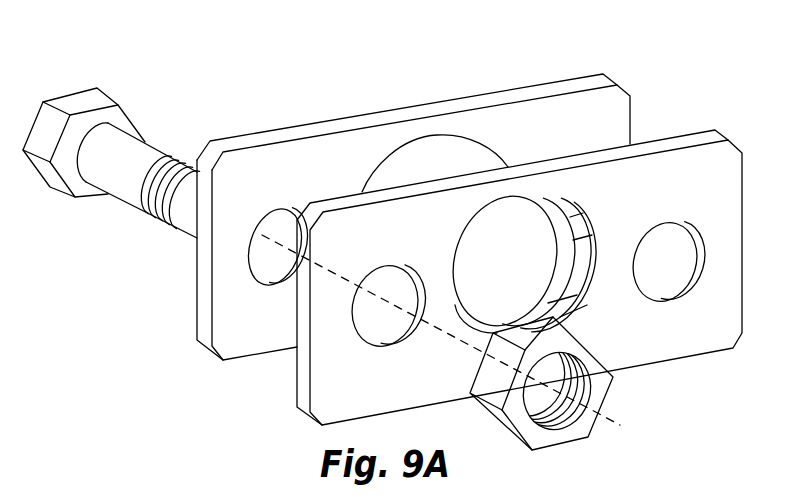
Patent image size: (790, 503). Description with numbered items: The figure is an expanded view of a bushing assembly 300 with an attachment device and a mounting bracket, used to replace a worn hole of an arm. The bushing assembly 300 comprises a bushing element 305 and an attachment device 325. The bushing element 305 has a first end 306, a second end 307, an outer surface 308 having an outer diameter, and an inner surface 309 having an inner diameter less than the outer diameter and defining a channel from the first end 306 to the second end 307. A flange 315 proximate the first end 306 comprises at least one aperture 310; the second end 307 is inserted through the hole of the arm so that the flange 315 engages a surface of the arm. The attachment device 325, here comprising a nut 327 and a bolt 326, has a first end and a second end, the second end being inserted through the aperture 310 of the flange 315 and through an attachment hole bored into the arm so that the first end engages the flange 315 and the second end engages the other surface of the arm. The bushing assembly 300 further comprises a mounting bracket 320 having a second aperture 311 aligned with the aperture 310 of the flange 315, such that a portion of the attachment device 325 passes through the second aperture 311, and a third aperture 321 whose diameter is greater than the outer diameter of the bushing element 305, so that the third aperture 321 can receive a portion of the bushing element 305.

The bushing assembly 300 is at (113, 48).
The bushing element 305 is at (308, 60).
The first end 306 is at (425, 133).
The second end 307 is at (565, 277).
The outer surface 308 is at (405, 167).
The inner surface 309 is at (531, 278).
The aperture 310 is at (275, 288).
The second aperture 311 is at (350, 313).
The flange 315 is at (570, 115).
The mounting bracket 320 is at (727, 377).
The third aperture 321 is at (528, 192).
The attachment device 325 is at (111, 187).
The bolt 326 is at (123, 177).
The nut 327 is at (533, 437).